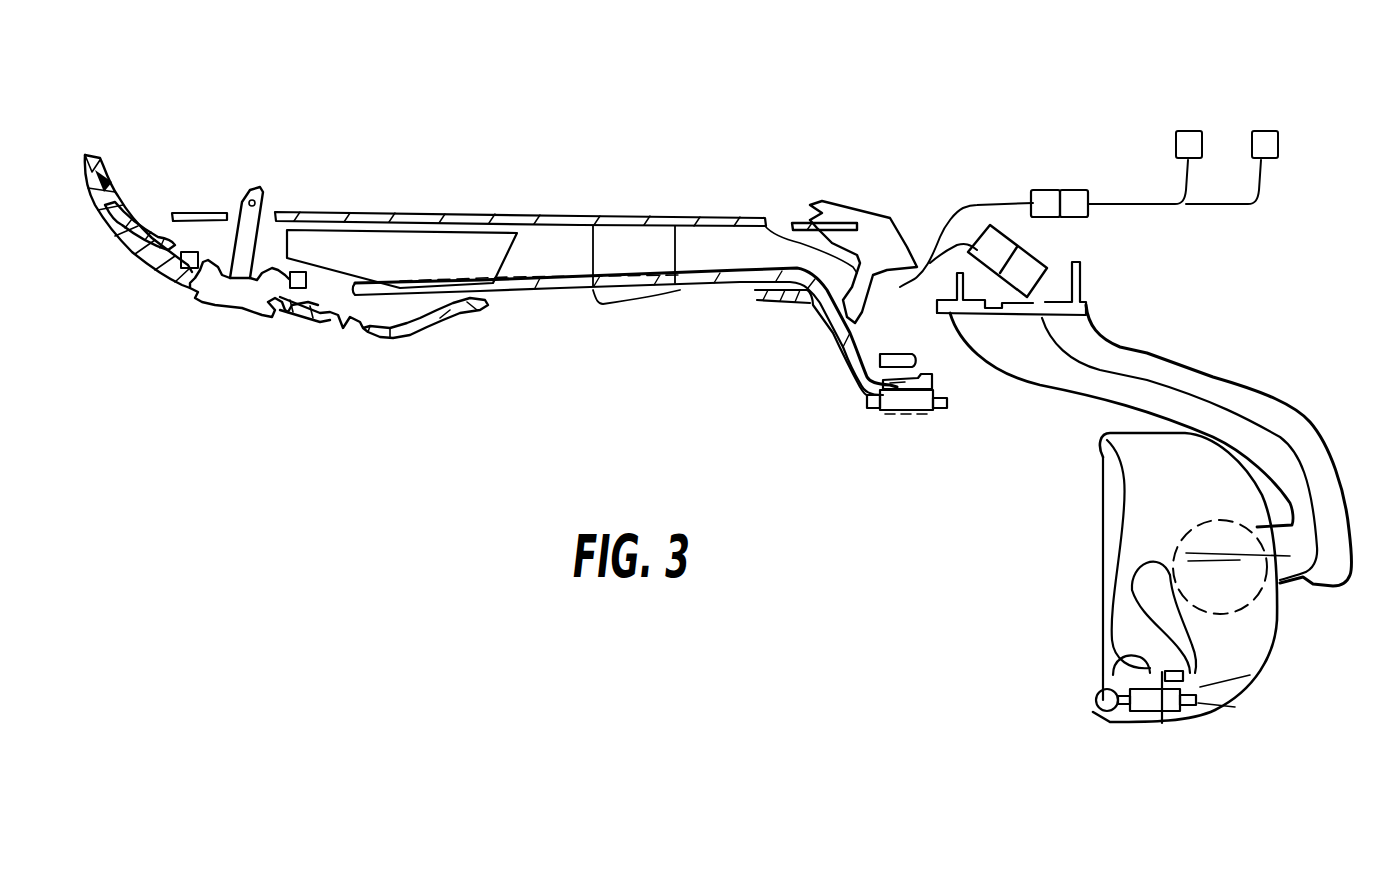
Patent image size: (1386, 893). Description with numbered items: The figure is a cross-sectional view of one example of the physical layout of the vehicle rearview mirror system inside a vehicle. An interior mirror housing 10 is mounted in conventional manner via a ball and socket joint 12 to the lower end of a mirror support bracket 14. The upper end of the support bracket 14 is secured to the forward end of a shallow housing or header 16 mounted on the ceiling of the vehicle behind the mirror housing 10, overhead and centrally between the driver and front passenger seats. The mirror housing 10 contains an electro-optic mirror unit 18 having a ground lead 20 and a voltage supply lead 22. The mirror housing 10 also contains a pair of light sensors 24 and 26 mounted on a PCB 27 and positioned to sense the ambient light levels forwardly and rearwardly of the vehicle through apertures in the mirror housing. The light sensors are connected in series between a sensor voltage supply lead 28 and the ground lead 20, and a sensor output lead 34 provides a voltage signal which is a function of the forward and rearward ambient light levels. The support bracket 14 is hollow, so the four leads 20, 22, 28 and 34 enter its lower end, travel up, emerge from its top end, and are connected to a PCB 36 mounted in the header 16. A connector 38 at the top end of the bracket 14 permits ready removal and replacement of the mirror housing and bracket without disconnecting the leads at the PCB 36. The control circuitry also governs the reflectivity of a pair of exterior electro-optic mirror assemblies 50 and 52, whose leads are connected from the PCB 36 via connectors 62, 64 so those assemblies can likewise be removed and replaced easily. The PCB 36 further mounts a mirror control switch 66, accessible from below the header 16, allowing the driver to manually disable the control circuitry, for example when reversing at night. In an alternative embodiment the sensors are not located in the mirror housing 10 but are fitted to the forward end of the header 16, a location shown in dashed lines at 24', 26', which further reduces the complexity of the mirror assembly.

The interior mirror housing 10 is at (1277, 657).
The ball and socket joint 12 is at (1198, 535).
The mirror support bracket 14 is at (1307, 413).
The header 16 is at (427, 338).
The electro-optic mirror unit 18 is at (1100, 530).
The ground lead 20 is at (1110, 670).
The voltage supply lead 22 is at (1100, 497).
The light sensor 24 is at (1215, 733).
The light sensor (alternate location) 24' is at (924, 426).
The light sensor 26 is at (1080, 733).
The light sensor (alternate location) 26' is at (871, 408).
The PCB 27 is at (1153, 703).
The sensor voltage supply lead 28 is at (1143, 377).
The sensor output lead 34 is at (1121, 420).
The PCB 36 is at (421, 214).
The connector 38 is at (995, 248).
The exterior electro-optic mirror assembly 50 is at (1184, 142).
The exterior electro-optic mirror assembly 52 is at (1270, 142).
The connector 62 is at (1077, 196).
The connector 64 is at (1074, 203).
The mirror control switch 66 is at (603, 304).